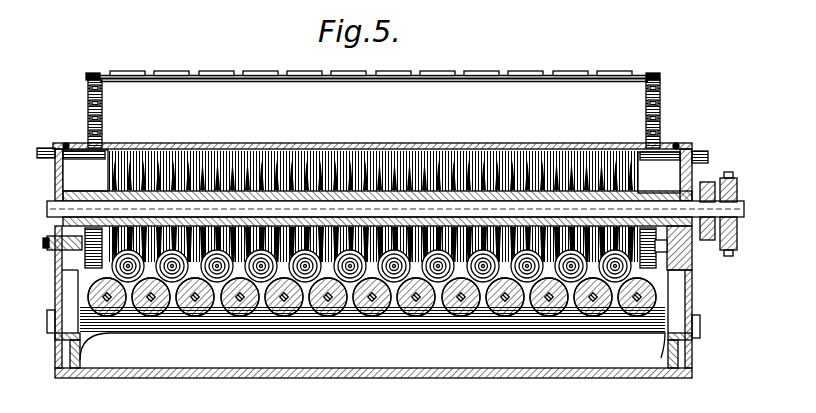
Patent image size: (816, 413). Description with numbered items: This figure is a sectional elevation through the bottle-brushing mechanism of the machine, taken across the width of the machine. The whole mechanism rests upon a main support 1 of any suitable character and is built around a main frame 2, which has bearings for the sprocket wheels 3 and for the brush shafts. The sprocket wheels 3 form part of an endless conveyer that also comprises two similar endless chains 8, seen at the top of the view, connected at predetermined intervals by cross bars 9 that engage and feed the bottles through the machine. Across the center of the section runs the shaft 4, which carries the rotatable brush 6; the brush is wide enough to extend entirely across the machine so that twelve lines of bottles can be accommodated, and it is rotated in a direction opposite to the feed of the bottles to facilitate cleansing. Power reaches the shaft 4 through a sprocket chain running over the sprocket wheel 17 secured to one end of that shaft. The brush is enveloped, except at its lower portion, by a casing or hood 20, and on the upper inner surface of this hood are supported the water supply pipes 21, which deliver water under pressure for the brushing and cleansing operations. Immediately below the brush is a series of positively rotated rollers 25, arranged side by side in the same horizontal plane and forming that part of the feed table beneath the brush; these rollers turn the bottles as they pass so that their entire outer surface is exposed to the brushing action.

The main support 1 is at (73, 352).
The main frame 2 is at (55, 300).
The sprocket wheels 3 is at (100, 106).
The shaft 4 is at (47, 208).
The rotatable brush 6 is at (172, 155).
The endless chains 8 is at (87, 77).
The cross bars 9 is at (215, 79).
The sprocket wheel 17 is at (706, 241).
The casing or hood 20 is at (290, 153).
The water supply pipes 21 is at (95, 160).
The rotated rollers 25 is at (152, 312).